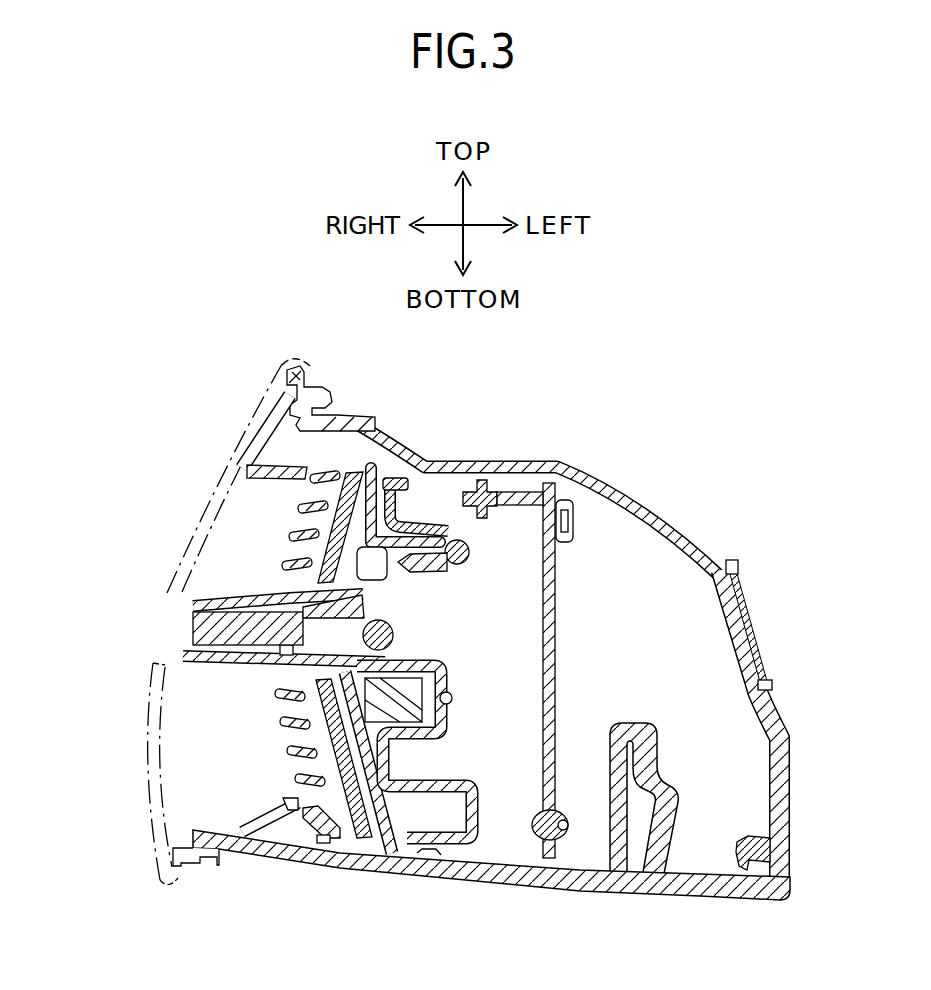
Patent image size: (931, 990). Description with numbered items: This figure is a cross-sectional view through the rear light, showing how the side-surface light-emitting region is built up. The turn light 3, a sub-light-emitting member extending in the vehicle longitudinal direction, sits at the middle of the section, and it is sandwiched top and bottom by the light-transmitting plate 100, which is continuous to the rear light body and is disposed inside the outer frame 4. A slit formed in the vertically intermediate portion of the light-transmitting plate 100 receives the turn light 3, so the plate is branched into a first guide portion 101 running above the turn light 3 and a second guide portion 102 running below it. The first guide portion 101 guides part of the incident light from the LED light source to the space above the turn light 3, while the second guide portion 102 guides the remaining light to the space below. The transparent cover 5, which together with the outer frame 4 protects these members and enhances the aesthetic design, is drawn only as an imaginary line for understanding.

The turn light 3 is at (203, 630).
The outer frame 4 is at (260, 438).
The transparent cover 5 is at (148, 766).
The light-transmitting plate 100 is at (405, 645).
The first guide portion 101 is at (355, 472).
The second guide portion 102 is at (367, 840).